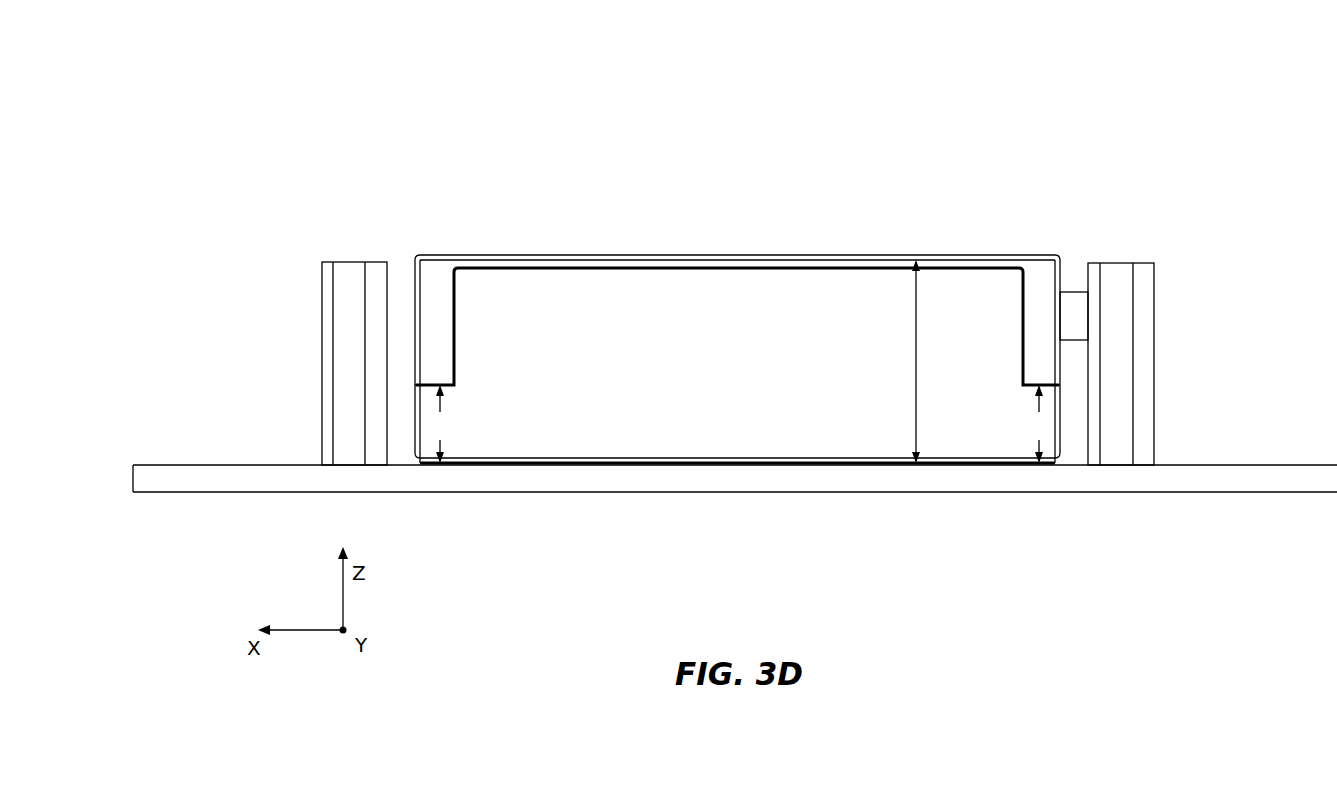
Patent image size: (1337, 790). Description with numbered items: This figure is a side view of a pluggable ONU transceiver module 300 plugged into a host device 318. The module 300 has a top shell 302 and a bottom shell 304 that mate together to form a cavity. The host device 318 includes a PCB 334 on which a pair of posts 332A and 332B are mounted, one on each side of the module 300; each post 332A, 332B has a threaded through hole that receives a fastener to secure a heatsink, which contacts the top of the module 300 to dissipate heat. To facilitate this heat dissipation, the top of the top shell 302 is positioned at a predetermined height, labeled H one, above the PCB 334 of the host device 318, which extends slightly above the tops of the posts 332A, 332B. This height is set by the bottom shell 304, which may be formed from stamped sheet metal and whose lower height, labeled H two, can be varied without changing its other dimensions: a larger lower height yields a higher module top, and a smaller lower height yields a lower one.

The pluggable ONU transceiver module 300 is at (426, 144).
The top shell 302 is at (772, 255).
The bottom shell 304 is at (755, 384).
The host device 318 is at (230, 403).
The post 332A is at (352, 261).
The post 332B is at (1118, 262).
The PCB 334 is at (243, 482).